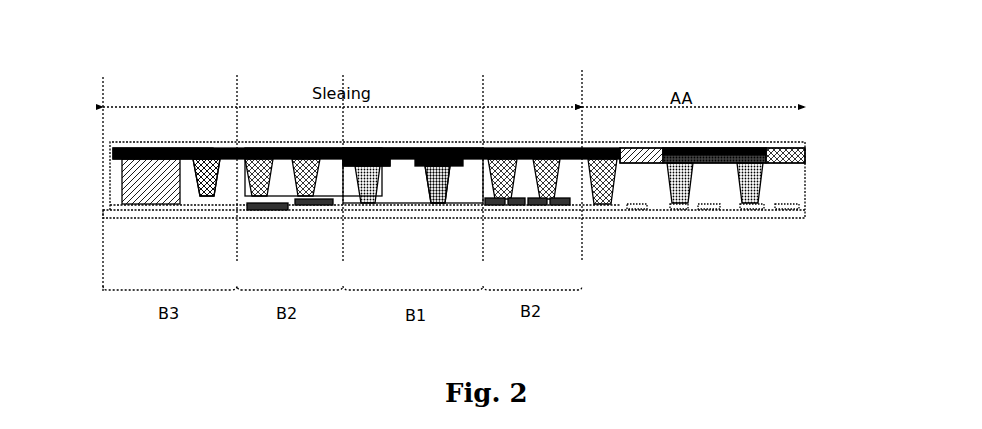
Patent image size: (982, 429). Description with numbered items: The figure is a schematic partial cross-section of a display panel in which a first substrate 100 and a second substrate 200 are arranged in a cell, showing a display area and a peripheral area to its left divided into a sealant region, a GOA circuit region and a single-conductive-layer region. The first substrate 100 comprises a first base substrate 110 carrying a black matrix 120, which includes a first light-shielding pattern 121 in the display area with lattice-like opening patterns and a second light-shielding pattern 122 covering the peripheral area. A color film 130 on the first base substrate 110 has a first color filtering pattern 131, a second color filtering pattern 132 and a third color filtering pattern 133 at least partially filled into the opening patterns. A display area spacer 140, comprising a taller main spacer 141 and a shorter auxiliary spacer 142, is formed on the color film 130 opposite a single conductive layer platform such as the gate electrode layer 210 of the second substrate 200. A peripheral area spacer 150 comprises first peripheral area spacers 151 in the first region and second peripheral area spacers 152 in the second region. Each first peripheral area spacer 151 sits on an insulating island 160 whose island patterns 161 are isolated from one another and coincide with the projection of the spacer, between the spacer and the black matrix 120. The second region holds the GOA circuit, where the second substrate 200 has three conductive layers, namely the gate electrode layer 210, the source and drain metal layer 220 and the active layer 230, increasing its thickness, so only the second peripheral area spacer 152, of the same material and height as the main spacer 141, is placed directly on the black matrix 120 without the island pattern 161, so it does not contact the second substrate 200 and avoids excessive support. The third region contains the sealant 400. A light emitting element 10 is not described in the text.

The light emitting device 10 is at (500, 150).
The first substrate 100 is at (115, 145).
The first base substrate 110 is at (113, 140).
The black matrix 120 is at (115, 152).
The first light-shielding pattern 121 is at (805, 160).
The second light-shielding pattern 122 is at (188, 149).
The color film 130 is at (780, 127).
The first color filtering pattern 131 is at (655, 150).
The second color filtering pattern 132 is at (742, 150).
The third color filtering pattern 133 is at (800, 160).
The display area spacer 140 is at (713, 228).
The main spacer 141 is at (632, 210).
The auxiliary spacer 142 is at (713, 183).
The peripheral area spacer 150 is at (382, 41).
The first peripheral area spacer 151 is at (438, 150).
The second peripheral area spacer 152 is at (213, 150).
The insulating island 160 is at (447, 150).
The island pattern 161 is at (437, 184).
The second substrate 200 is at (133, 220).
The gate electrode layer 210 is at (200, 208).
The source and drain metal layer 220 is at (306, 207).
The active layer 230 is at (330, 205).
The sealant 400 is at (127, 185).